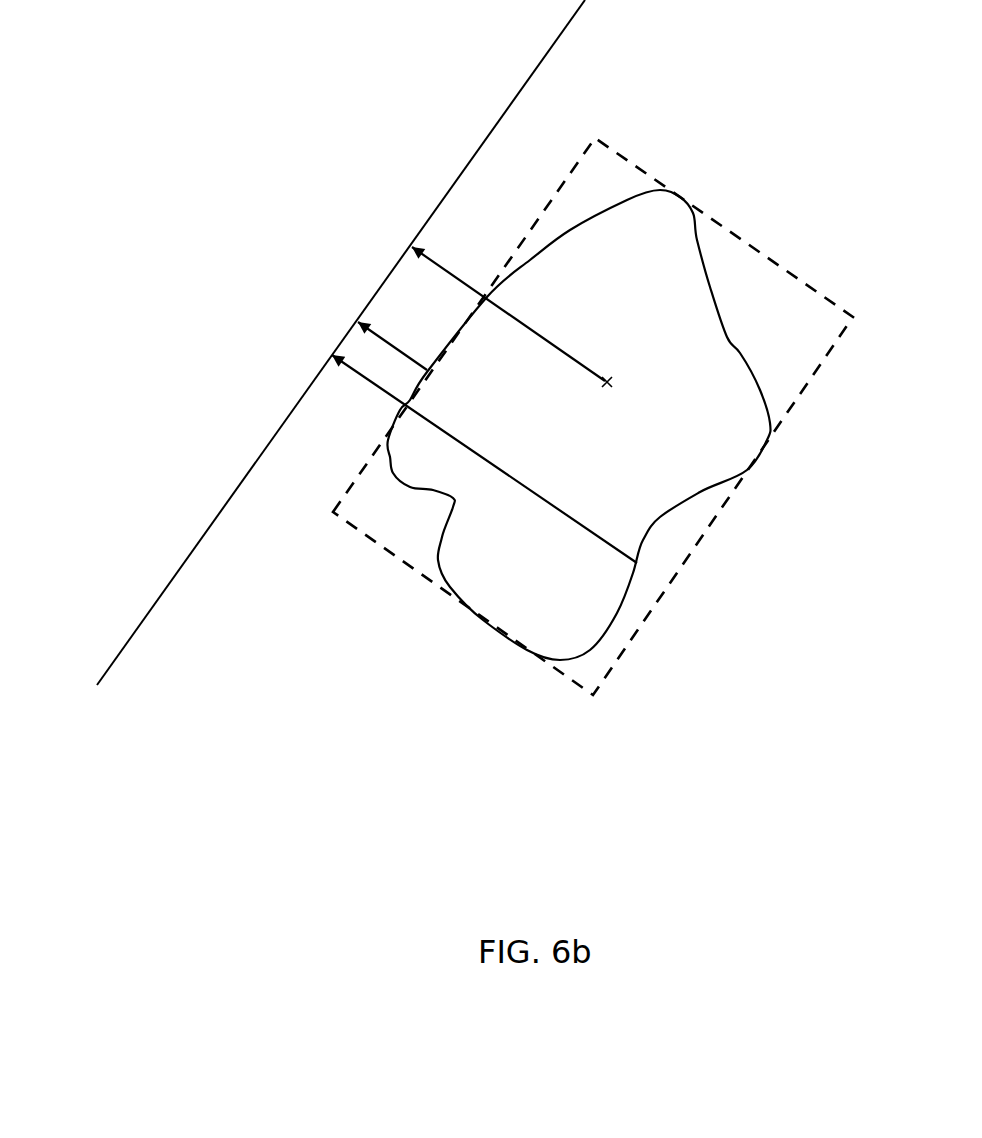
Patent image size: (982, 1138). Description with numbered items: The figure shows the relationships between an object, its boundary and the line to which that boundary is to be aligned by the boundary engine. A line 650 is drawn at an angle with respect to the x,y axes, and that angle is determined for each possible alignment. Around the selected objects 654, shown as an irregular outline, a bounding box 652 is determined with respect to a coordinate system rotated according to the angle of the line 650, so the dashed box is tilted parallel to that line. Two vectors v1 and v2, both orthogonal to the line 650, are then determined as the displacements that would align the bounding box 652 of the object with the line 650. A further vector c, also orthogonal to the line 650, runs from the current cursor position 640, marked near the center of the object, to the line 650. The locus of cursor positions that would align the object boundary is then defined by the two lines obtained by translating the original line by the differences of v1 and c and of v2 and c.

The line 650 is at (132, 629).
The bounding box 652 is at (635, 161).
The selected objects 654 is at (729, 328).
The cursor position 640 is at (616, 397).
The vector c is at (453, 264).
The vector v1 is at (397, 339).
The vector v2 is at (376, 391).